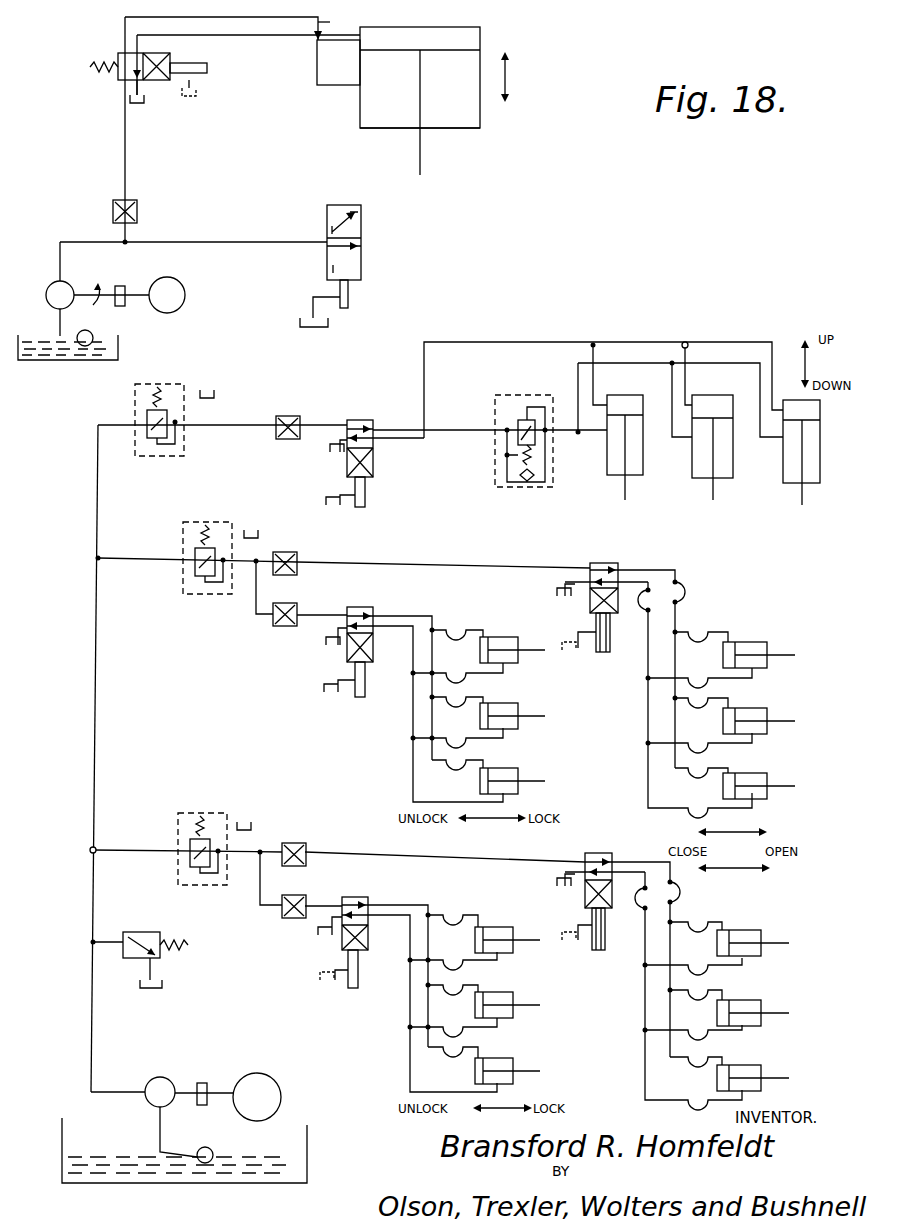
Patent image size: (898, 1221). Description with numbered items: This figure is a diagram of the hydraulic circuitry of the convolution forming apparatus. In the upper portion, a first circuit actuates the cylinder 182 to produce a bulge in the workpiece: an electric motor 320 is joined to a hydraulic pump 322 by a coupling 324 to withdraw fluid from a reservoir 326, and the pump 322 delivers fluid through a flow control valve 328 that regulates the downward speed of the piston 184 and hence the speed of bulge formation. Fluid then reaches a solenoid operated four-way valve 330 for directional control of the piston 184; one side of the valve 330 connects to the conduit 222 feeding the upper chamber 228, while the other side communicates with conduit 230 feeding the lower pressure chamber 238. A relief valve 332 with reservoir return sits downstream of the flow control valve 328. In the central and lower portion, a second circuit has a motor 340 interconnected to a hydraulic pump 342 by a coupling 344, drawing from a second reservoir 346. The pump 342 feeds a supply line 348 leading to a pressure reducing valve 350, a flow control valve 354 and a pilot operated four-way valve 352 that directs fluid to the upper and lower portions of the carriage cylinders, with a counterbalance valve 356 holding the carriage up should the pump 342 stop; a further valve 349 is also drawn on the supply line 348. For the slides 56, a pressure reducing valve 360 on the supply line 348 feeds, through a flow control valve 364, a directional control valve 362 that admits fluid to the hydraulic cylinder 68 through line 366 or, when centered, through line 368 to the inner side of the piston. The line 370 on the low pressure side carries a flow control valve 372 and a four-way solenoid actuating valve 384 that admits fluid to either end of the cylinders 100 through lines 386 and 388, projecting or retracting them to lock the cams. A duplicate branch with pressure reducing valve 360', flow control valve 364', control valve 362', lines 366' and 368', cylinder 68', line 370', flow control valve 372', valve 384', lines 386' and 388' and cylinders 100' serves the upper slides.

The slides 56 is at (678, 475).
The hydraulic cylinder 68 is at (763, 1010).
The hydraulic cylinder 68' is at (769, 720).
The hydraulic cylinder 100 is at (526, 1005).
The hydraulic cylinder 100' is at (529, 715).
The cylinder 182 is at (482, 118).
The piston 184 is at (482, 58).
The conduit 222 is at (340, 40).
The upper chamber 228 is at (420, 40).
The conduit 230 is at (327, 86).
The lower pressure chamber 238 is at (388, 128).
The electric motor 320 is at (175, 312).
The hydraulic pump 322 is at (70, 282).
The coupling 324 is at (125, 287).
The reservoir 326 is at (94, 340).
The flow control valve 328 is at (138, 211).
The solenoid operated four-way valve 330 is at (124, 60).
The relief valve 332 is at (327, 228).
The motor 340 is at (268, 1077).
The hydraulic pump 342 is at (156, 1077).
The coupling 344 is at (205, 1083).
The second reservoir 346 is at (126, 1185).
The supply line 348 is at (96, 733).
The relief valve 349 is at (148, 923).
The pressure reducing valve 350 is at (135, 412).
The pilot operated solenoid four-way valve 352 is at (358, 420).
The flow control valve 354 is at (288, 415).
The counterbalance valve 356 is at (500, 487).
The pressure reducing valve 360 is at (214, 830).
The pressure reducing valve 360' is at (220, 539).
The four-way solenoid operated directional control valve 362 is at (601, 886).
The four-way solenoid operated directional control valve 362' is at (602, 591).
The flow control valve 364 is at (311, 840).
The flow control valve 364' is at (306, 550).
The line 366 is at (687, 964).
The line 366' is at (693, 674).
The line 368 is at (666, 991).
The line 368' is at (672, 700).
The line 370 is at (256, 903).
The line 370' is at (232, 597).
The flow control valve 372 is at (321, 890).
The flow control valve 372' is at (314, 601).
The four-way solenoid actuating valve 384 is at (368, 927).
The four-way solenoid actuating valve 384' is at (373, 637).
The line 386 is at (408, 981).
The line 386' is at (425, 714).
The line 388 is at (413, 1003).
The line 388' is at (418, 693).